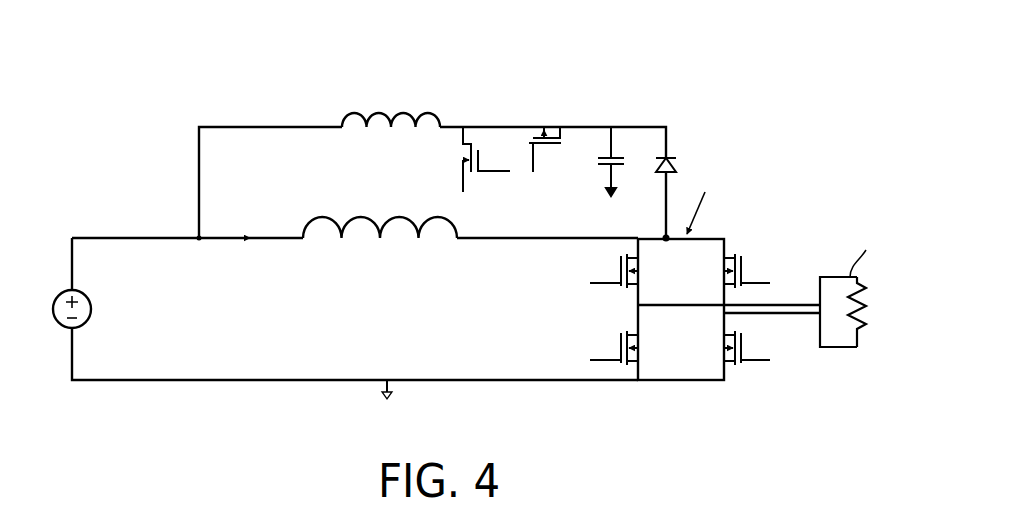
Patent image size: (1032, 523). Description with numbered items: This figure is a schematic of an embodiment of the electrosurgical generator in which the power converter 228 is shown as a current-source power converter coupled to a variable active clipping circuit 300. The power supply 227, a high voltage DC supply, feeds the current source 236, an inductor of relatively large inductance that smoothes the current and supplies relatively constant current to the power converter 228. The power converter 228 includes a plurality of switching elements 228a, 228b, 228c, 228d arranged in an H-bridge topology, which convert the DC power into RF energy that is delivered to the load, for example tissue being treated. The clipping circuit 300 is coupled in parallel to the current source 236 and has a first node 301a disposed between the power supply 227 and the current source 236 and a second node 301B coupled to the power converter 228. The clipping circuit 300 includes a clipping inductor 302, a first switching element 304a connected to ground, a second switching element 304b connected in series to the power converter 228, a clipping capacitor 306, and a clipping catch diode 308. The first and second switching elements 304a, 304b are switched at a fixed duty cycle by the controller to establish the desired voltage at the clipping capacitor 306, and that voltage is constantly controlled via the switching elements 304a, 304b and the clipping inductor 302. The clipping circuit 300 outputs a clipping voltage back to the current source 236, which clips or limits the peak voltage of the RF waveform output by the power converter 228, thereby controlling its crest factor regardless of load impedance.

The clipping circuit 300 is at (546, 81).
The clipping inductor 302 is at (412, 113).
The current source 236 is at (393, 217).
The first node 301a is at (197, 236).
The first switching element 304a is at (497, 173).
The second switching element 304b is at (563, 141).
The clipping capacitor 306 is at (618, 156).
The clipping catch diode 308 is at (677, 164).
The power converter 228 is at (680, 381).
The switching element 228a is at (620, 263).
The switching element 228b is at (620, 340).
The switching element 228c is at (738, 255).
The switching element 228d is at (731, 366).
The second node 301B is at (667, 244).
The power supply 227 is at (69, 331).